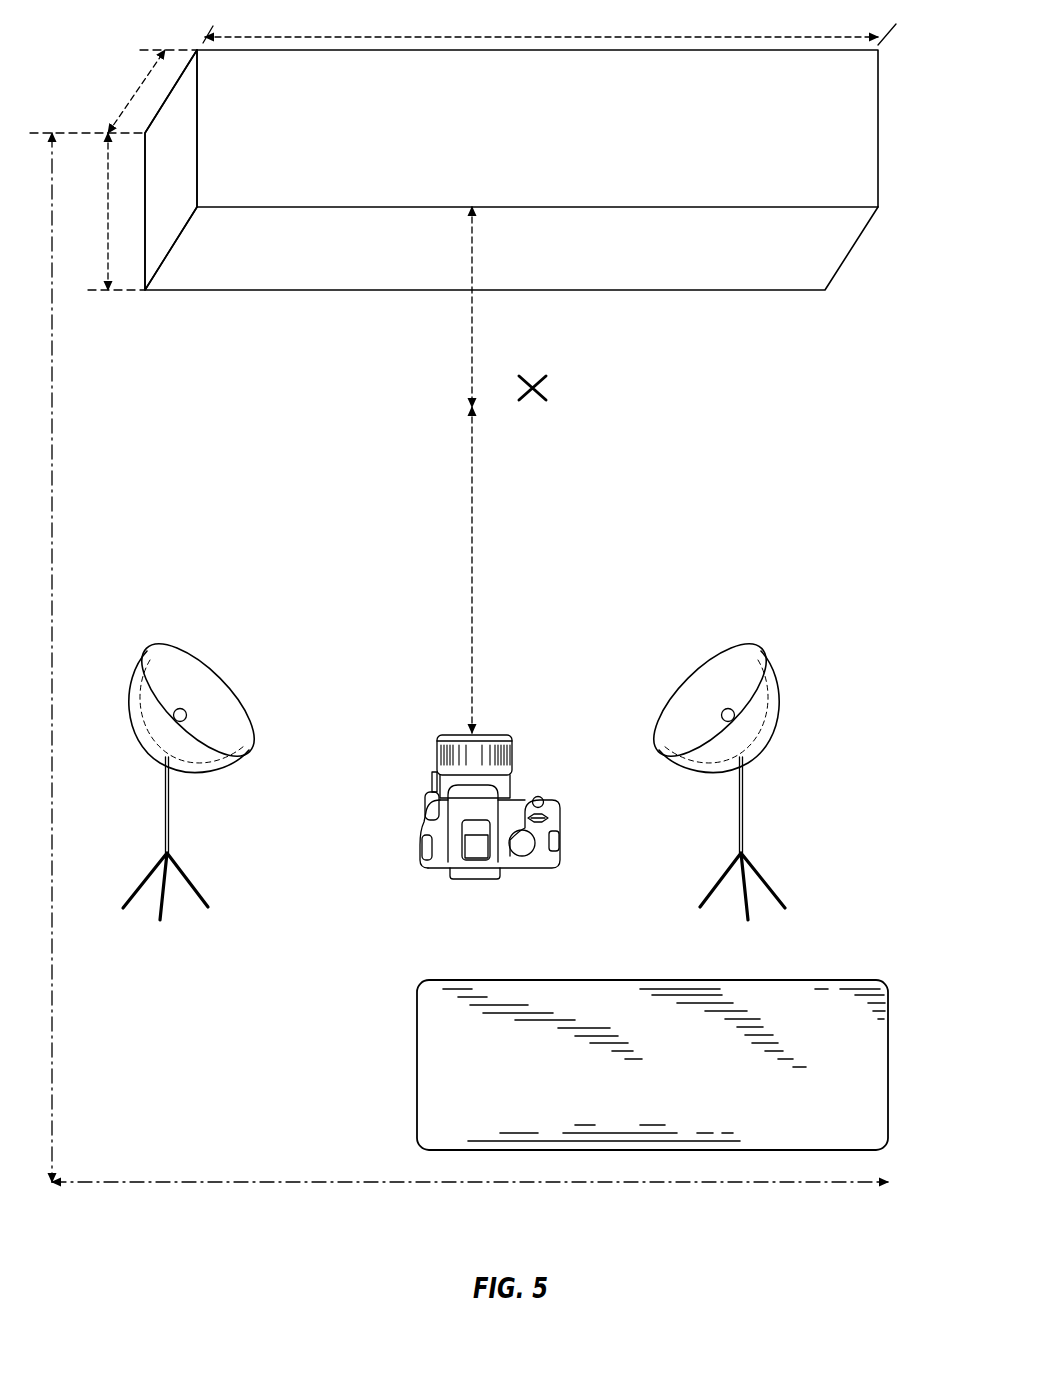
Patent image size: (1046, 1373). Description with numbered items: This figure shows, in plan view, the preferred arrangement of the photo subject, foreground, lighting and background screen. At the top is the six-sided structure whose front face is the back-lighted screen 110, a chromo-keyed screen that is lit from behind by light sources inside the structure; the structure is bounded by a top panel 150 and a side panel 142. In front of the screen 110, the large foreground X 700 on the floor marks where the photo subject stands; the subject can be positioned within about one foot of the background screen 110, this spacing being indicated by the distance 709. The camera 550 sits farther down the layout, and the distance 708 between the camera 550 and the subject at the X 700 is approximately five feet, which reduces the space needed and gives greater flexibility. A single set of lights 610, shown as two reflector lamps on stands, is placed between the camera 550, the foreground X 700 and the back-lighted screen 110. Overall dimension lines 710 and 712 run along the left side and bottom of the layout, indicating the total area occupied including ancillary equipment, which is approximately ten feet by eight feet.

The back-lighted screen surface 110 is at (705, 240).
The top panel 150 is at (540, 143).
The side panel 142 is at (167, 224).
The foreground X 700 is at (543, 390).
The camera-to-subject distance 708 is at (472, 593).
The subject-to-background distance 709 is at (472, 337).
The studio length 710 is at (53, 566).
The studio width 712 is at (285, 1182).
The set of lights 610 is at (142, 696).
The camera 550 is at (421, 830).